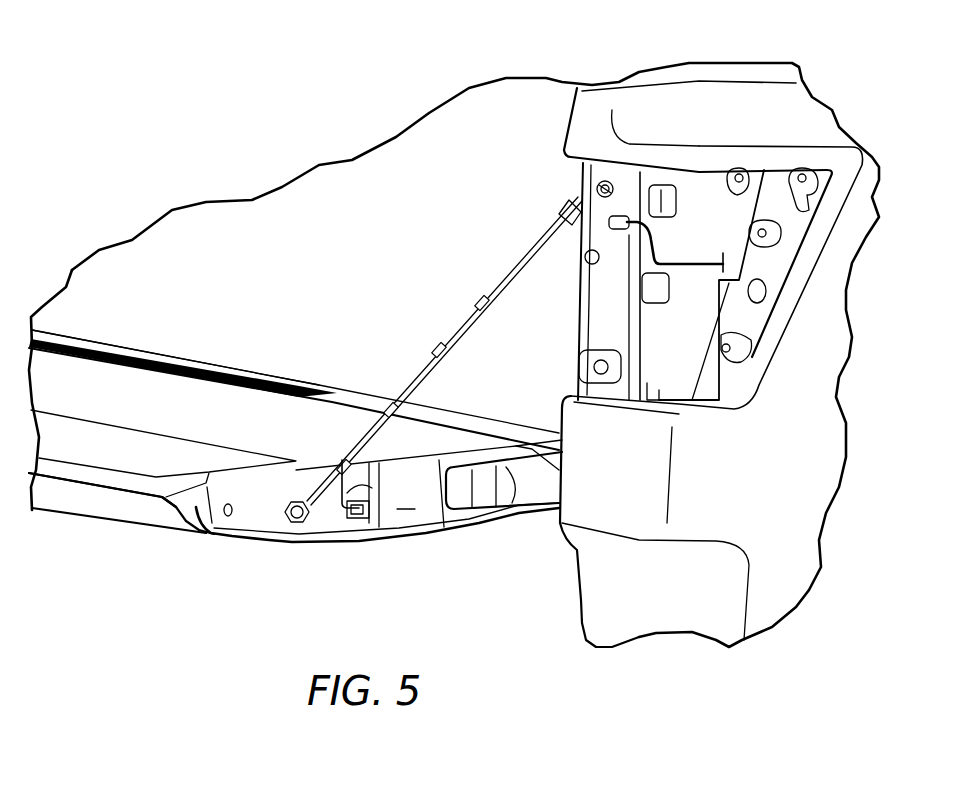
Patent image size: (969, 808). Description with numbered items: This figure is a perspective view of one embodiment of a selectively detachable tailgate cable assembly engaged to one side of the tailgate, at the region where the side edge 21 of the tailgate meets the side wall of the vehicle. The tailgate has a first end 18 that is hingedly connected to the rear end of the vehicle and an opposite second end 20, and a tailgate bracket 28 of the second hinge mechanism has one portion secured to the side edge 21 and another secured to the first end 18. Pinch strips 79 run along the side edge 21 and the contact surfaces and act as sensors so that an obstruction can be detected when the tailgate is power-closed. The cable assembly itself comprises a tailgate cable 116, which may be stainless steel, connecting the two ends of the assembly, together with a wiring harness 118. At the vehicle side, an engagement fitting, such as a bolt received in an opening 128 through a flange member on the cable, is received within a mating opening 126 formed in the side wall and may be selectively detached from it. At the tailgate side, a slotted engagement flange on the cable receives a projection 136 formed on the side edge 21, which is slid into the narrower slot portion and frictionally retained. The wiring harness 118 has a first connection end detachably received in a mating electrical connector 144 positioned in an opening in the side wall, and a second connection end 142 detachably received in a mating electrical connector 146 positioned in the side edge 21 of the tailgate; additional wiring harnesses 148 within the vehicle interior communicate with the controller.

The first end 18 is at (210, 370).
The second end 20 is at (125, 545).
The side edge 21 is at (407, 510).
The tailgate bracket 28 is at (505, 472).
The pinch strips 79 is at (110, 345).
The tailgate cable 116 is at (460, 333).
The wiring harness 118 is at (380, 463).
The mating opening 126 is at (526, 545).
The opening 128 is at (604, 185).
The projection 136 is at (307, 517).
The second connection end 142 is at (367, 527).
The mating electrical connector 144 is at (648, 185).
The mating electrical connector 146 is at (348, 523).
The additional wiring harnesses 148 is at (690, 257).